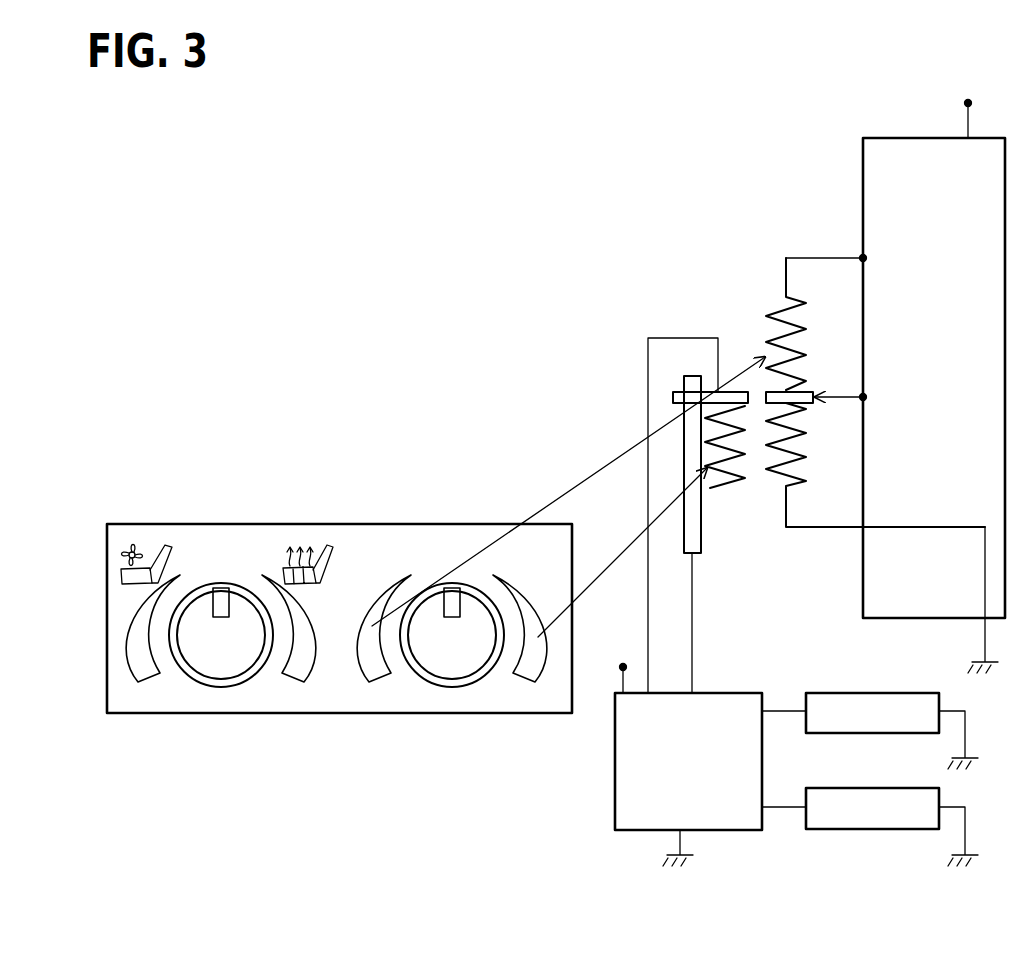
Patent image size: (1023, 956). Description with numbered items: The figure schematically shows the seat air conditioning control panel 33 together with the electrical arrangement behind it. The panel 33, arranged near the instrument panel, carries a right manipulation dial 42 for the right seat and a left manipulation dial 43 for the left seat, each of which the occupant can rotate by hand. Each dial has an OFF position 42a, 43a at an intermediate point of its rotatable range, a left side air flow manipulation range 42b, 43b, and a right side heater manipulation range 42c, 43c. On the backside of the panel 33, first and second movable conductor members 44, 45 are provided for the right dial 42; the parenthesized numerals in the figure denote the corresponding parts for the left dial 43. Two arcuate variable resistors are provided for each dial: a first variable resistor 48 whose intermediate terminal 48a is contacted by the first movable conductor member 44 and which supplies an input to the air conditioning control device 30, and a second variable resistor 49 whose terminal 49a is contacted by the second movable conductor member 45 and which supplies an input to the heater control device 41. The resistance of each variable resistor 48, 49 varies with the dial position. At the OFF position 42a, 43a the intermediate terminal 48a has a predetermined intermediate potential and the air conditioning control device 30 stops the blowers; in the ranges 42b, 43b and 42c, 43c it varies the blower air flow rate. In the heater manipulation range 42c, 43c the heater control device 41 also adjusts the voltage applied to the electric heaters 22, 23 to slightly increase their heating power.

The air conditioning control device 30 is at (887, 135).
The seat air conditioning control panel 33 is at (107, 607).
The heater control device 41 is at (718, 693).
The electric heater 22 is at (868, 693).
The electric heater 23 is at (868, 788).
The right manipulation dial 42 is at (452, 660).
The OFF position 42a is at (453, 548).
The left side air flow manipulation range 42b is at (379, 682).
The right side heater manipulation range 42c is at (521, 682).
The left manipulation dial 43 is at (221, 660).
The OFF position 43a is at (222, 548).
The left side air flow manipulation range 43b is at (148, 682).
The right side heater manipulation range 43c is at (290, 682).
The first movable conductor member 44 is at (784, 295).
The second movable conductor member 45 is at (673, 398).
The first variable resistor 48 is at (773, 348).
The intermediate terminal 48a is at (810, 393).
The second variable resistor 49 is at (733, 483).
The terminal 49a is at (702, 553).